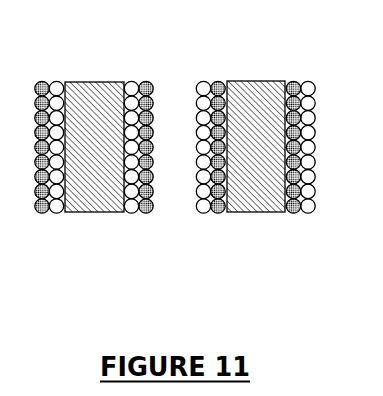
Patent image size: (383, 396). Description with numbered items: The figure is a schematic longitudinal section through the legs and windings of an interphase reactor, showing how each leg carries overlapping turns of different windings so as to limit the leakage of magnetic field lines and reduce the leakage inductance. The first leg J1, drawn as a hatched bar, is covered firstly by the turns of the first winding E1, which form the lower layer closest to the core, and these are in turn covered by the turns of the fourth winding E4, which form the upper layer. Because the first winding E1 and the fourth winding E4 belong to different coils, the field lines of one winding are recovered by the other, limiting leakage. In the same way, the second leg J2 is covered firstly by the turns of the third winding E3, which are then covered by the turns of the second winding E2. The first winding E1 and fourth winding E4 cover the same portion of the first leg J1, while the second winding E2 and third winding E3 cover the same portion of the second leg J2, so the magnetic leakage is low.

The first winding E1 is at (130, 207).
The second winding E2 is at (308, 89).
The third winding E3 is at (295, 207).
The fourth winding E4 is at (145, 89).
The first leg J1 is at (94, 147).
The second leg J2 is at (256, 146).